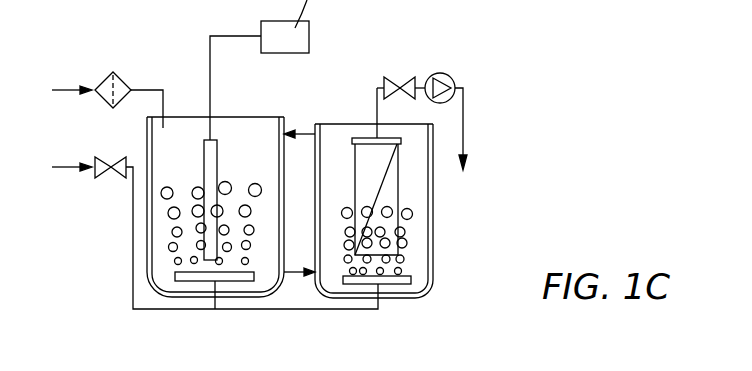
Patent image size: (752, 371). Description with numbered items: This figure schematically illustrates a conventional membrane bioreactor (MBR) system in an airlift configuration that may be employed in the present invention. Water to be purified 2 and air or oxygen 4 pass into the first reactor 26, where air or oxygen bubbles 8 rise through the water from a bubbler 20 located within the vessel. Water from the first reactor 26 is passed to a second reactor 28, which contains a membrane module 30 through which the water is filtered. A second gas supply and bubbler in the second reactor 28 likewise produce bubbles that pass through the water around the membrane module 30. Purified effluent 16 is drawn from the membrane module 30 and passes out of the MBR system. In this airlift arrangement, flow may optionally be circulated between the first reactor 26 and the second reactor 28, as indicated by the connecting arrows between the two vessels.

The water to be purified 2 is at (97, 100).
The air or oxygen 4 is at (204, 231).
The air or oxygen bubbles 8 is at (255, 183).
The purified effluent 16 is at (465, 122).
The bubbler 20 is at (395, 130).
The first reactor 26 is at (162, 262).
The second reactor 28 is at (417, 261).
The membrane module 30 is at (392, 190).